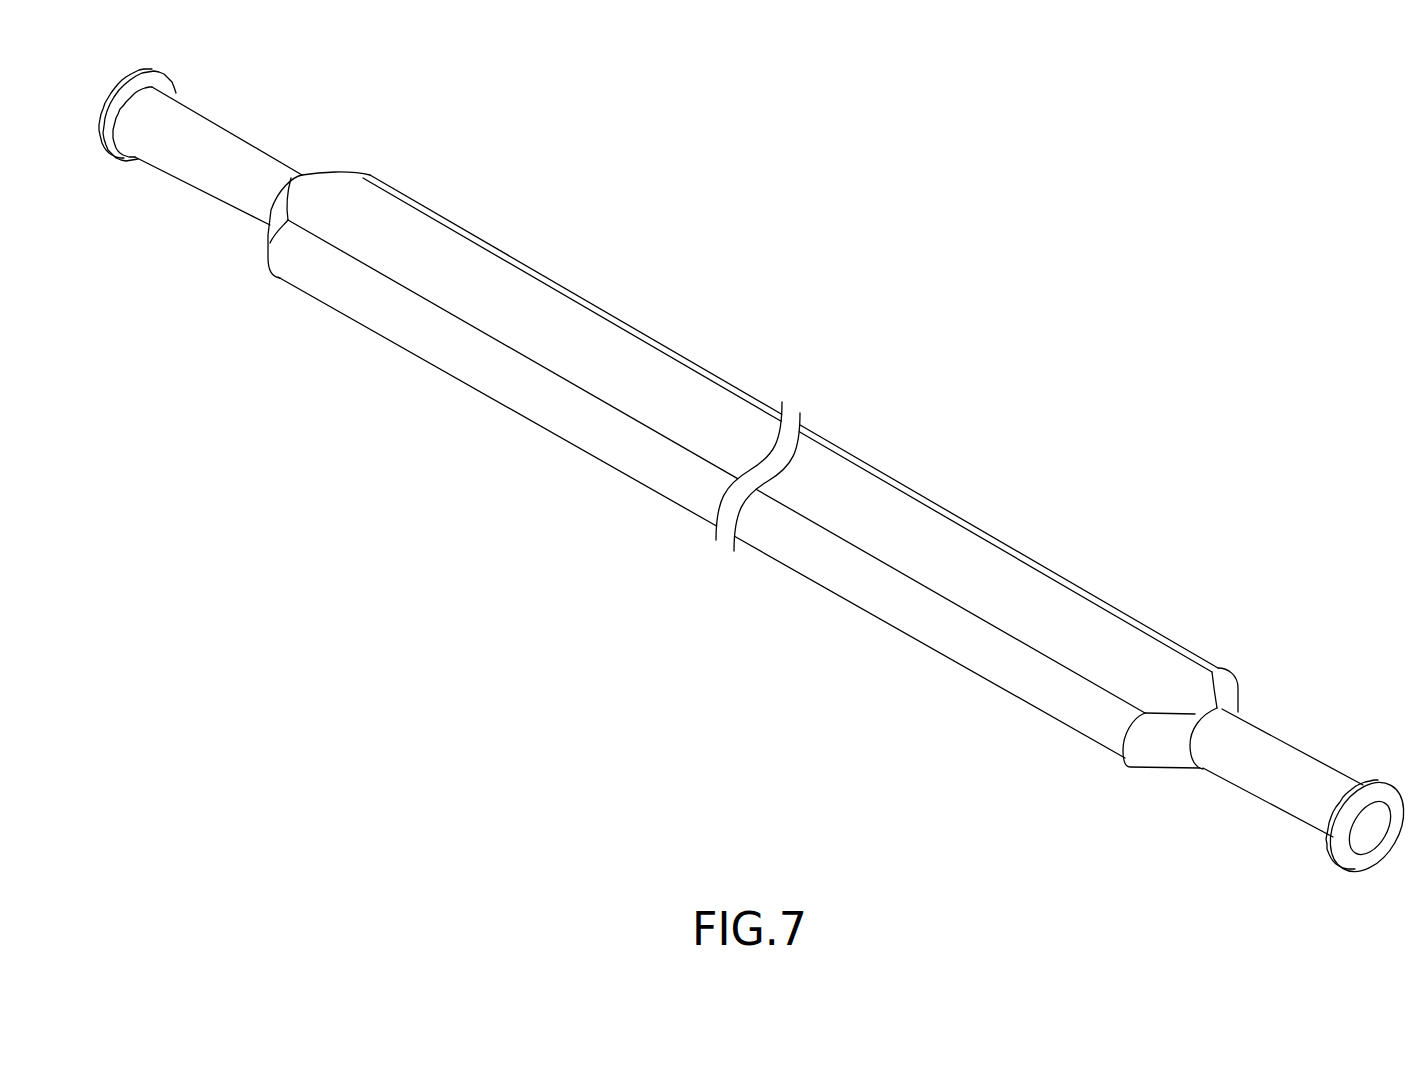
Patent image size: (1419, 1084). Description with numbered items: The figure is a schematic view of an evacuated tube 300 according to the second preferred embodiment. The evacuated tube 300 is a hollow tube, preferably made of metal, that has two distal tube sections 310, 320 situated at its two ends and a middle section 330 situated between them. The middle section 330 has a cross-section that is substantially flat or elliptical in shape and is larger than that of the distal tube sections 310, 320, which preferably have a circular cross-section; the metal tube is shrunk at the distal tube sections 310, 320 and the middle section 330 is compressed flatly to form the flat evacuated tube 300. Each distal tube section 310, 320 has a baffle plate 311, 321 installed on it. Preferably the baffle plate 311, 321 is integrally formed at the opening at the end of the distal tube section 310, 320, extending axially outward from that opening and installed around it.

The evacuated tube 300 is at (766, 78).
The distal tube section 310 is at (190, 165).
The baffle plate 311 is at (160, 82).
The distal tube section 320 is at (1307, 765).
The baffle plate 321 is at (1353, 860).
The middle section 330 is at (640, 353).